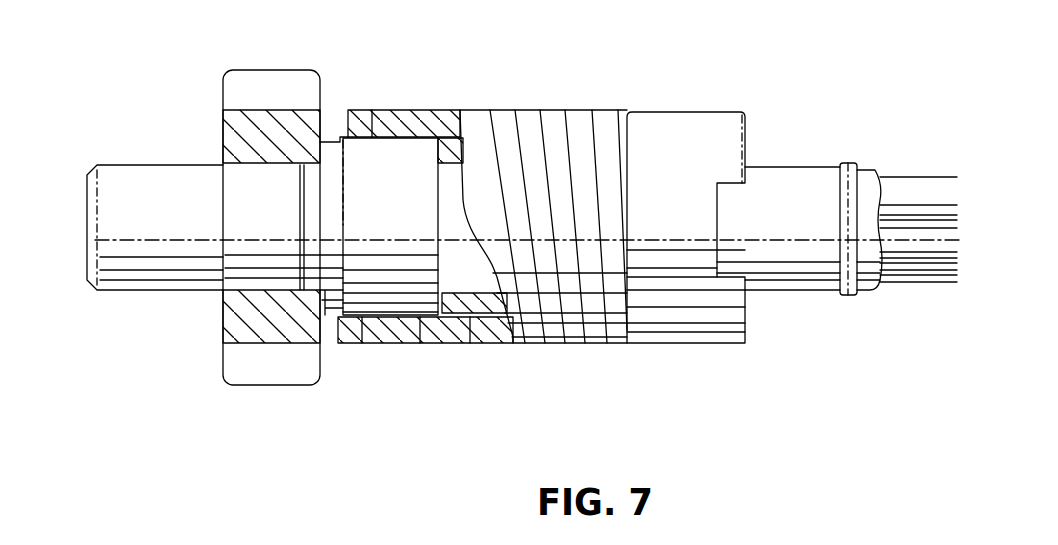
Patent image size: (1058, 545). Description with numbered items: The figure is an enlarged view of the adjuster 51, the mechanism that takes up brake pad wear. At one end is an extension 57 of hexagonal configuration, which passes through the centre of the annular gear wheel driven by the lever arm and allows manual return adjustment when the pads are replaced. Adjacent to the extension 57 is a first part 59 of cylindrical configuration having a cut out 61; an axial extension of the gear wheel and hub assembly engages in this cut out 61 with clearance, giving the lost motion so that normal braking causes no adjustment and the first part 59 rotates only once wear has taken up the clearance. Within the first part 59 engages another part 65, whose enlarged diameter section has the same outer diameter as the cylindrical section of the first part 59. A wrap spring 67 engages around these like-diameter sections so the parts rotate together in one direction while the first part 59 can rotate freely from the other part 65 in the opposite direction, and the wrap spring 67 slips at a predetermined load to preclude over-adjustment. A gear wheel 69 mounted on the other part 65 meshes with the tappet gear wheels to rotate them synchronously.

The adjuster 51 is at (342, 74).
The extension 57 is at (933, 268).
The first part 59 is at (690, 313).
The cut out 61 is at (723, 212).
The other part 65 is at (377, 165).
The wrap spring 67 is at (447, 113).
The gear wheel 69 is at (242, 132).